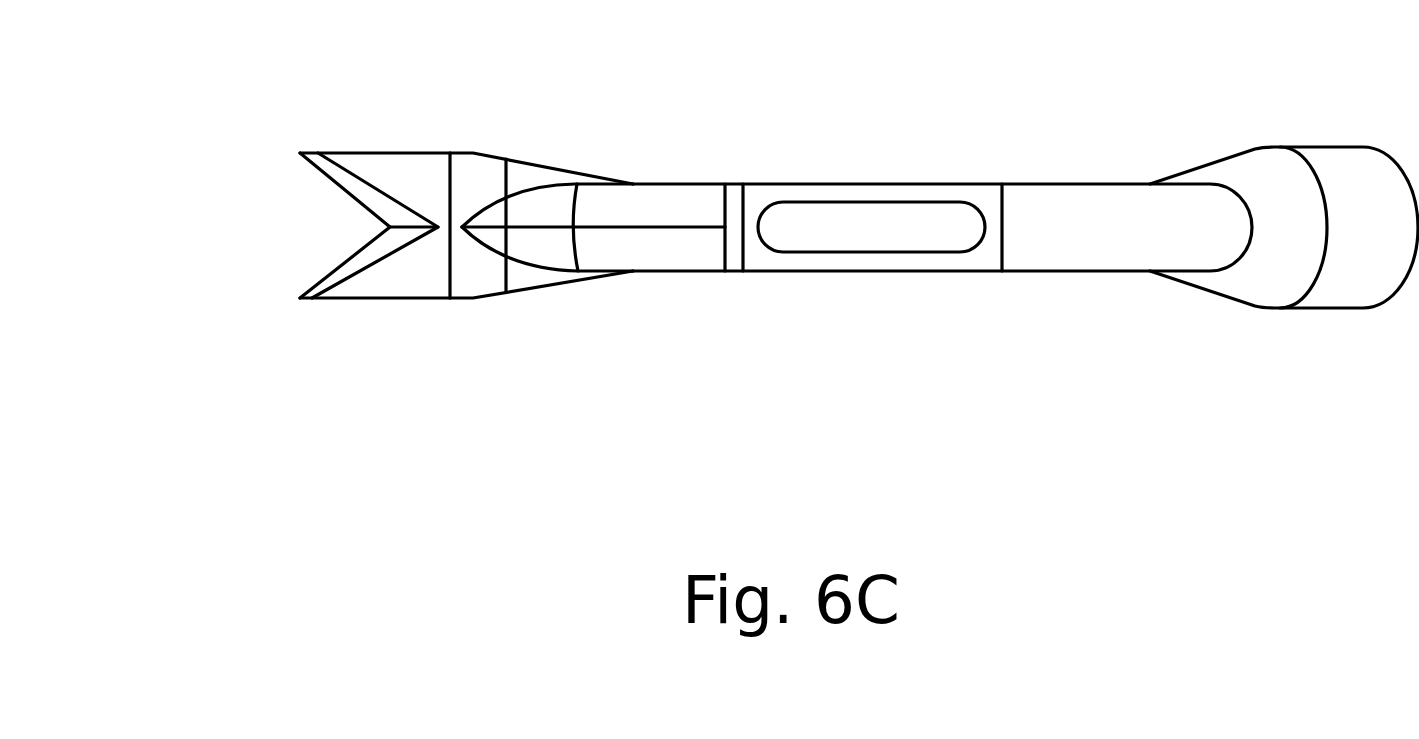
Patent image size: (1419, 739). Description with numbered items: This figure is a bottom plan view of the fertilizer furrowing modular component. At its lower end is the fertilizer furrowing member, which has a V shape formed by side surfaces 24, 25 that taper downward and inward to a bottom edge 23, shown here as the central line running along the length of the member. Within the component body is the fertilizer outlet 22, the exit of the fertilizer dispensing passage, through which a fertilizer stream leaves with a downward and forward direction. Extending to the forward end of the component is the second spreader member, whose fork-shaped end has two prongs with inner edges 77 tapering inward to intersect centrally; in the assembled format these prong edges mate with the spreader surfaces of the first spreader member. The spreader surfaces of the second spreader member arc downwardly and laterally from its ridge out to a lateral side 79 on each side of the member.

The inner edges 77 is at (335, 181).
The lateral side 79 is at (395, 283).
The side surface 25 is at (612, 200).
The side surface 24 is at (613, 253).
The bottom edge 23 is at (693, 228).
The fertilizer outlet 22 is at (968, 252).